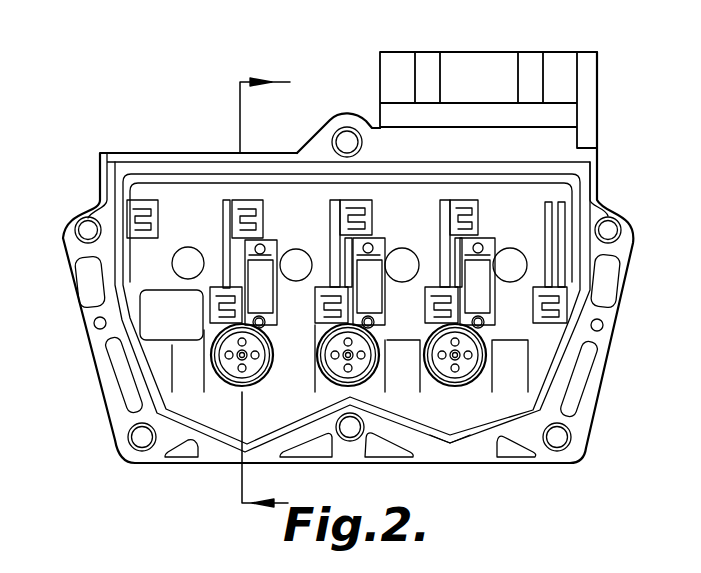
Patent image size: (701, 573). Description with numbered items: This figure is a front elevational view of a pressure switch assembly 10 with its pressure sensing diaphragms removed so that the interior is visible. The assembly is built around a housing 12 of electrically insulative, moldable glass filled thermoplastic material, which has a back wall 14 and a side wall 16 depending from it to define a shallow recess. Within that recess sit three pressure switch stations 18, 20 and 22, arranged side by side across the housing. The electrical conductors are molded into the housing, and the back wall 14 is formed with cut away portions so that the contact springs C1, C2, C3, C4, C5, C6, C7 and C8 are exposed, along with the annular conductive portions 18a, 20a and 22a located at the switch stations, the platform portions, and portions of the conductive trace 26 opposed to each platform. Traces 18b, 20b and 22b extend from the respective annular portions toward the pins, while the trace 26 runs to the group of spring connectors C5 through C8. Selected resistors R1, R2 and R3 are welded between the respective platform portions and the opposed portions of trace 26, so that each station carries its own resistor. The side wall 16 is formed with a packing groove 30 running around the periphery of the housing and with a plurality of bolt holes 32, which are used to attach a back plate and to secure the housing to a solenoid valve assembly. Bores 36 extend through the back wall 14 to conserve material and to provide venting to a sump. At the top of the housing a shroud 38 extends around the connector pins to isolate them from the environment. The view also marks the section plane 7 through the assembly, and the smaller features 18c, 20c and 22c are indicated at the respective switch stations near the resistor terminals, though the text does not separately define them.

The switch assembly 10 is at (92, 128).
The housing 12 is at (212, 464).
The back wall 14 is at (412, 206).
The side wall 16 is at (436, 445).
The pressure switch station 18 is at (228, 380).
The annular portion 18a is at (242, 388).
The trace 18b is at (266, 372).
The potentiometer terminal 18c is at (266, 325).
The pressure switch station 20 is at (336, 380).
The annular portion 20a is at (372, 388).
The trace 20b is at (380, 360).
The potentiometer terminal 20c is at (376, 325).
The pressure switch station 22 is at (460, 384).
The annular portion 22a is at (474, 386).
The trace 22b is at (487, 360).
The potentiometer terminal 22c is at (486, 325).
The conductive trace 26 is at (270, 250).
The packing groove 30 is at (142, 132).
The bolt holes 32 is at (349, 140).
The bores 36 is at (198, 240).
The shroud 38 is at (490, 58).
The section line 7- 7 is at (265, 292).
The spring connector C1 is at (160, 212).
The spring connector C2 is at (265, 214).
The spring connector C3 is at (346, 204).
The spring connector C4 is at (479, 212).
The spring connector C5 is at (555, 326).
The spring connector C6 is at (443, 280).
The spring connector C7 is at (332, 280).
The spring connector C8 is at (223, 292).
The resistor R1 is at (274, 299).
The resistor R2 is at (384, 299).
The resistor R3 is at (494, 299).